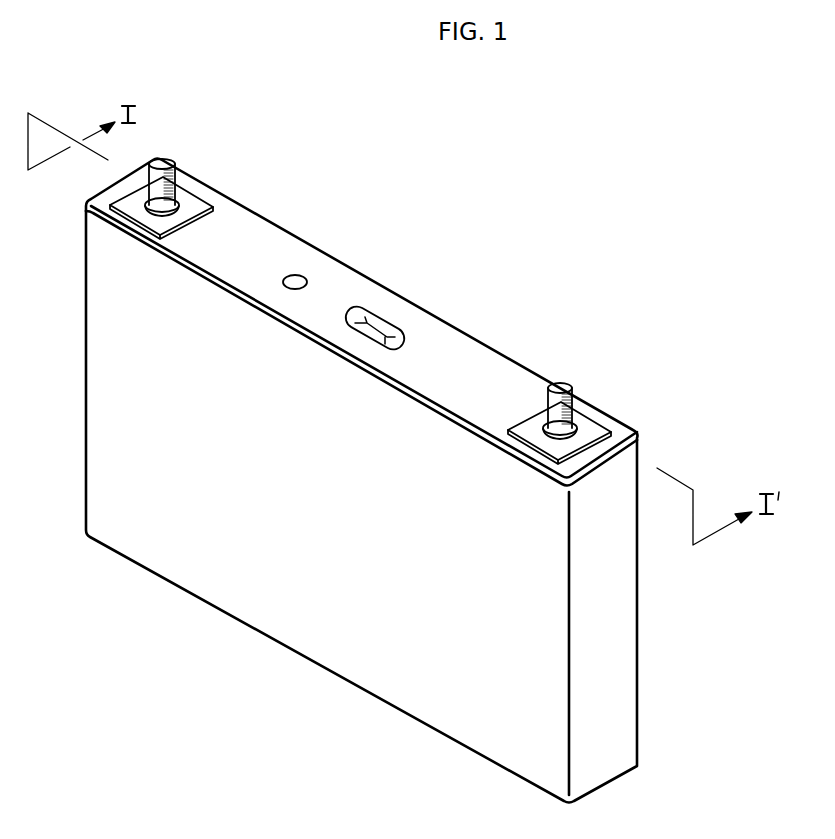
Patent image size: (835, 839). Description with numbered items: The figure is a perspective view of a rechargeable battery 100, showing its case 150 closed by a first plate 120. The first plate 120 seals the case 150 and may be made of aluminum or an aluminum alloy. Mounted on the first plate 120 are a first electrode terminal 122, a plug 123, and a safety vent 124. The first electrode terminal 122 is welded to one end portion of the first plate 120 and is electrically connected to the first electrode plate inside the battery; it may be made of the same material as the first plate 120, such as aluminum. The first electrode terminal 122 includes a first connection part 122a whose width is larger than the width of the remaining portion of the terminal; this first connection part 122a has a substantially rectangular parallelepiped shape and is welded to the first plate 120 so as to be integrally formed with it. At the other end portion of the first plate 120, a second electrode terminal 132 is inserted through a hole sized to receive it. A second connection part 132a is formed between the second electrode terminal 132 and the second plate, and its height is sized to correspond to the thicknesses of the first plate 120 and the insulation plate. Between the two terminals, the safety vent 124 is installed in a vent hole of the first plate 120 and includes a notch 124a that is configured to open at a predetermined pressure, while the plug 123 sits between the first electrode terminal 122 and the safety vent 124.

The rechargeable battery 100 is at (615, 127).
The first plate 120 is at (443, 338).
The first electrode terminal 122 is at (162, 162).
The first connection part 122a is at (190, 203).
The plug 123 is at (297, 278).
The safety vent 124 is at (375, 310).
The notch 124a is at (383, 327).
The second electrode terminal 132 is at (560, 381).
The second connection part 132a is at (587, 427).
The case 150 is at (305, 642).